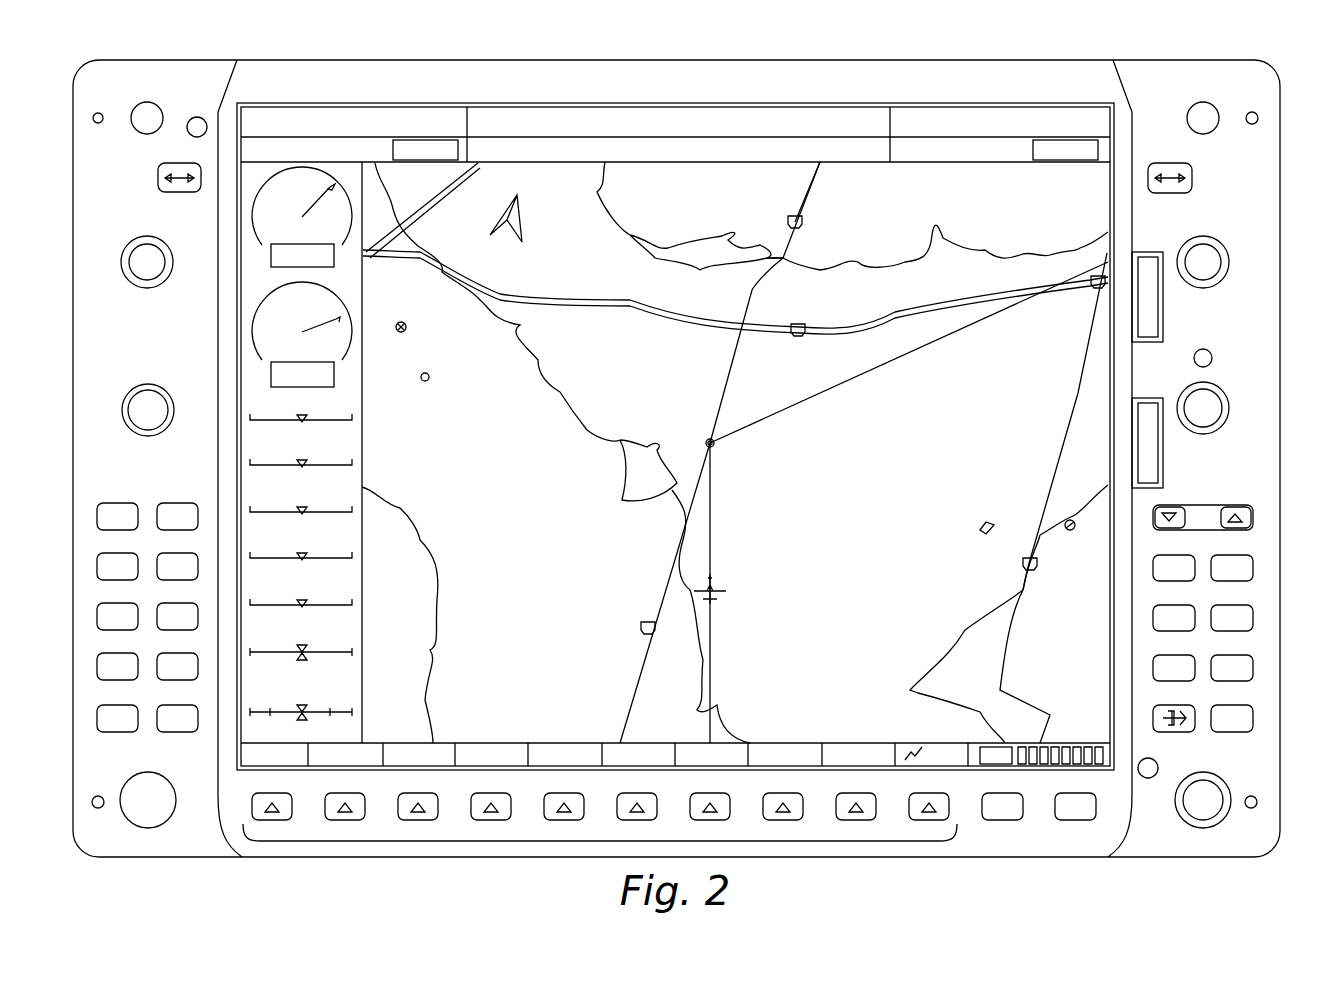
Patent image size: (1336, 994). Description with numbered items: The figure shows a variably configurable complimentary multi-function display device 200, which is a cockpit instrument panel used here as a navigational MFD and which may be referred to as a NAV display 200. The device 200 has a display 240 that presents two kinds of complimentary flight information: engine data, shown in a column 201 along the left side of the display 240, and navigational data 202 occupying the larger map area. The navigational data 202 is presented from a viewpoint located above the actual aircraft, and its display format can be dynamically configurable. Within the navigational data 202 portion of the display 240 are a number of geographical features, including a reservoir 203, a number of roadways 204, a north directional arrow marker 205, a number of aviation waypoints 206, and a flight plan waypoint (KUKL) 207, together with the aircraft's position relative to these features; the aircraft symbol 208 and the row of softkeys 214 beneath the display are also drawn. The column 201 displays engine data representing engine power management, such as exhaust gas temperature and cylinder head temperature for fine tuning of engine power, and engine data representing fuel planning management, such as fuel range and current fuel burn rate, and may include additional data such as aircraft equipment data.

The multi-function display device 200 is at (704, 466).
The engine data column 201 is at (238, 470).
The navigational data 202 is at (735, 406).
The reservoir 203 is at (622, 502).
The roadways 204 is at (728, 375).
The north directional arrow marker 205 is at (524, 218).
The aviation waypoints 206 is at (407, 328).
The flight plan waypoint (KUKL) 207 is at (716, 445).
The aircraft symbol 208 is at (725, 580).
The softkeys 214 is at (600, 842).
The display 240 is at (832, 187).